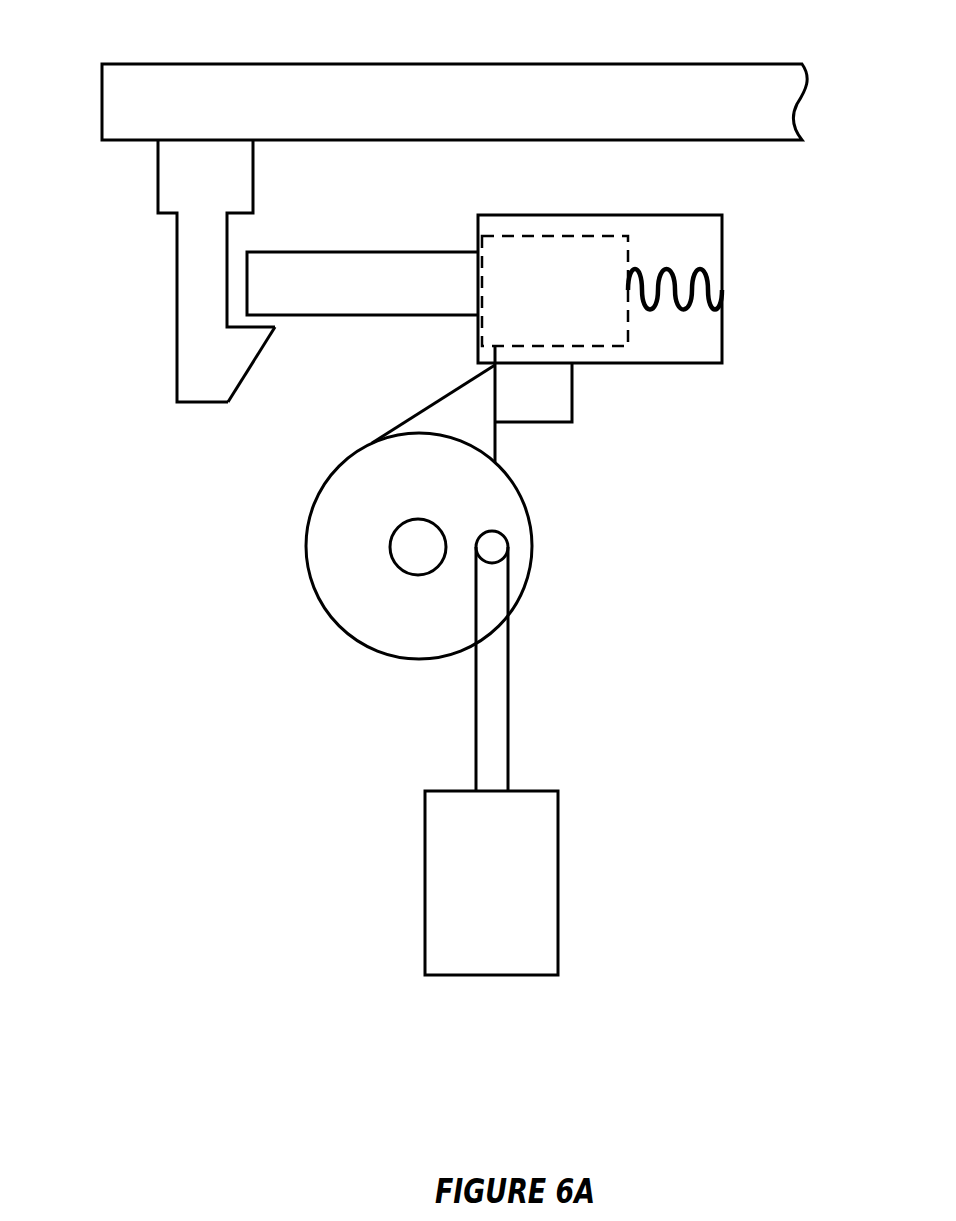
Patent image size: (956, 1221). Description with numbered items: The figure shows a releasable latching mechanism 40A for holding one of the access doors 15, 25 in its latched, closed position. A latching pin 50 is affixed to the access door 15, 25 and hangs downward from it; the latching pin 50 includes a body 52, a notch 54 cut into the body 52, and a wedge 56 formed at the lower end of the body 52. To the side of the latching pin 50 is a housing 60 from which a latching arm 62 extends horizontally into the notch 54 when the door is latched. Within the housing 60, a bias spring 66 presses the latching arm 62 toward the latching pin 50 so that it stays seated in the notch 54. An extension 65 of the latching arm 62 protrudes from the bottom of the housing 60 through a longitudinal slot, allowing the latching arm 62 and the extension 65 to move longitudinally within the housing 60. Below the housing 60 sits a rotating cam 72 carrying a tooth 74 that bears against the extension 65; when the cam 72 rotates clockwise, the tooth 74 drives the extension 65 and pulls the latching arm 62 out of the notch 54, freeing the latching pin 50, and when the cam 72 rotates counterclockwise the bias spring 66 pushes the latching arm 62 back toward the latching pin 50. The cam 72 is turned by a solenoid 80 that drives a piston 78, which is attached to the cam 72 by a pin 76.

The access door 15 is at (454, 78).
The access door 25 is at (377, 71).
The latching pin 50 is at (187, 278).
The body 52 is at (177, 300).
The notch 54 is at (235, 250).
The wedge 56 is at (252, 368).
The latching arm 62 is at (372, 251).
The housing 60 is at (657, 365).
The bias spring 66 is at (712, 272).
The extension 65 is at (552, 423).
The tooth 74 is at (440, 413).
The rotating cam 72 is at (323, 552).
The pin 76 is at (497, 549).
The piston 78 is at (500, 670).
The solenoid 80 is at (452, 851).
The releasable latching mechanism 40A is at (168, 496).